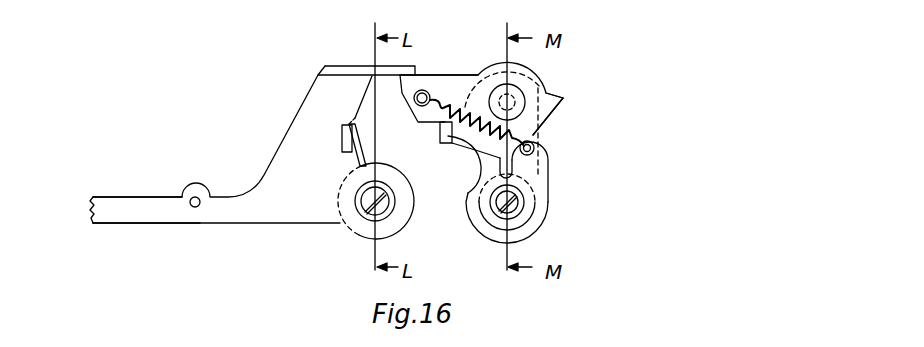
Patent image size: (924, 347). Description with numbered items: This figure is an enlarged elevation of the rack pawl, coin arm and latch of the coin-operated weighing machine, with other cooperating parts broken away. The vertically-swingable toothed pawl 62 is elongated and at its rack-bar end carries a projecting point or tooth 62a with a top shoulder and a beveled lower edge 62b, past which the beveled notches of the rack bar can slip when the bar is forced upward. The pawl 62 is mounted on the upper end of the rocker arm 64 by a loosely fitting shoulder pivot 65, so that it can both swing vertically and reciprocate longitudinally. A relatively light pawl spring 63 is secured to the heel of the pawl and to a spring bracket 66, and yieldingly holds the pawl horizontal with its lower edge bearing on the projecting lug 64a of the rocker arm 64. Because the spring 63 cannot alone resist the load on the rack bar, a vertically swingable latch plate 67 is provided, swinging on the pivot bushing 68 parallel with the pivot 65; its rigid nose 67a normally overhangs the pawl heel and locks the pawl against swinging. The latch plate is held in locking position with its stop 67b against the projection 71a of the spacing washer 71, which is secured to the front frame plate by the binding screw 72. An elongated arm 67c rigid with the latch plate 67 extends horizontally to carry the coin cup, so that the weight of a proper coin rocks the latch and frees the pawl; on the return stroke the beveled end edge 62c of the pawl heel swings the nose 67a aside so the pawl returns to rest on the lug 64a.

The pawl 62 is at (457, 75).
The point or tooth 62a is at (564, 98).
The beveled lower edge 62b is at (552, 115).
The beveled end edge 62c is at (417, 104).
The pawl spring 63 is at (477, 147).
The rocker arm 64 is at (481, 158).
The projecting lug 64a is at (441, 138).
The shoulder pivot 65 is at (522, 92).
The spring bracket 66 is at (547, 166).
The latch plate 67 is at (299, 110).
The nose 67a is at (417, 70).
The stop 67b is at (342, 142).
The elongated arm 67c is at (160, 212).
The pivot bushing 68 is at (355, 208).
The spacing washer 71 is at (362, 233).
The projection 71a is at (341, 130).
The binding screw 72 is at (360, 193).